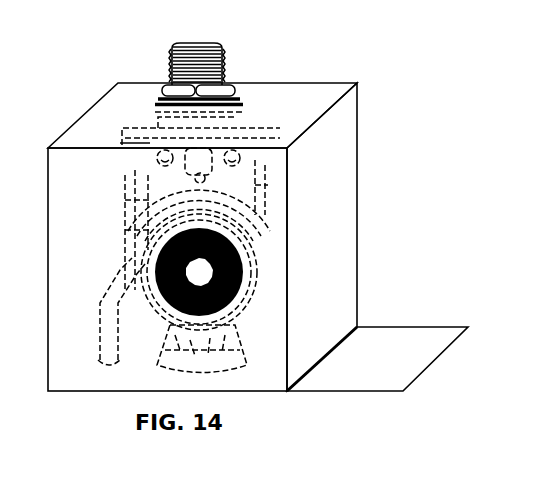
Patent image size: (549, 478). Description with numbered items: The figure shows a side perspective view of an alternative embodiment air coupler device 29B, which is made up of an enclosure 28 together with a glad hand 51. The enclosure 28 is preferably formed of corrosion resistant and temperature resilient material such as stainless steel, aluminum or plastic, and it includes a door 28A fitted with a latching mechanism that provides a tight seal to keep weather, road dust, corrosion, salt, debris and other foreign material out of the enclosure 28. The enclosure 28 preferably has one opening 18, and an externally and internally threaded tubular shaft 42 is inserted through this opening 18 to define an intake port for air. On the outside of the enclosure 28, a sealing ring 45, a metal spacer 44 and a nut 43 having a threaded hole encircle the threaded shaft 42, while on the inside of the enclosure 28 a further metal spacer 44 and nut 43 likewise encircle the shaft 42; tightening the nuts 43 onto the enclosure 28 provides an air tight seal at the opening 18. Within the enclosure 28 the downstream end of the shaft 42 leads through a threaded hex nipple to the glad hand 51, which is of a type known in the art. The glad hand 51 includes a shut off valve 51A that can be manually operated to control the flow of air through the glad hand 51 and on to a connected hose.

The threaded tubular shaft 42 is at (177, 50).
The nut 43 is at (163, 86).
The metal spacer 44 is at (157, 98).
The sealing ring 45 is at (155, 102).
The opening 18 is at (244, 110).
The enclosure 28 is at (360, 117).
The air coupler device 29B is at (363, 185).
The door 28A is at (394, 326).
The glad hand 51 is at (248, 311).
The shut off valve 51A is at (108, 310).